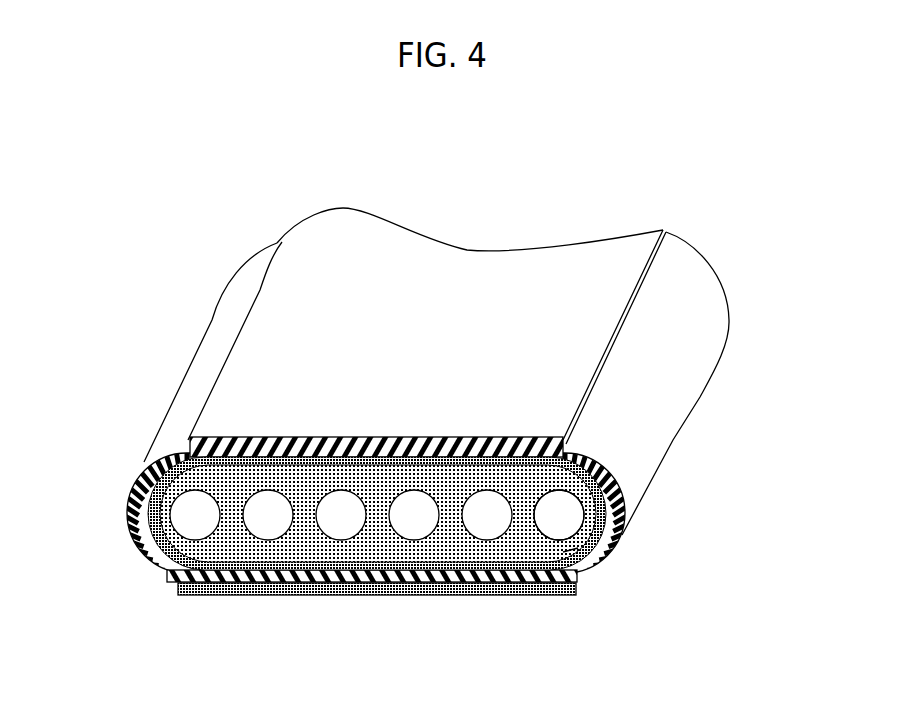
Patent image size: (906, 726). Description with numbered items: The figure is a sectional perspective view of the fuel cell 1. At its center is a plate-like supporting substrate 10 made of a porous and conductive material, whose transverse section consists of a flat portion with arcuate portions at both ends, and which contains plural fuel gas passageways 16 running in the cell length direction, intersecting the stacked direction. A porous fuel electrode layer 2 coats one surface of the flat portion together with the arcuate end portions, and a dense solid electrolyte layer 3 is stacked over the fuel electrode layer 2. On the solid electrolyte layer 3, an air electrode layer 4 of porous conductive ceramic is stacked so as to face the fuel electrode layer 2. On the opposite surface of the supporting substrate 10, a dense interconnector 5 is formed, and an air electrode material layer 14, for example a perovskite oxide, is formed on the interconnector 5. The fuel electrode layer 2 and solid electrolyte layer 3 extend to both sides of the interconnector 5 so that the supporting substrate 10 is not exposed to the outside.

The fuel cell 1 is at (175, 290).
The fuel electrode layer 2 is at (622, 500).
The solid electrolyte layer 3 is at (618, 546).
The air electrode layer 4 is at (450, 595).
The interconnector 5 is at (565, 454).
The supporting substrate 10 is at (607, 562).
The air electrode material layer 14 is at (277, 438).
The fuel gas passageways 16 is at (262, 519).